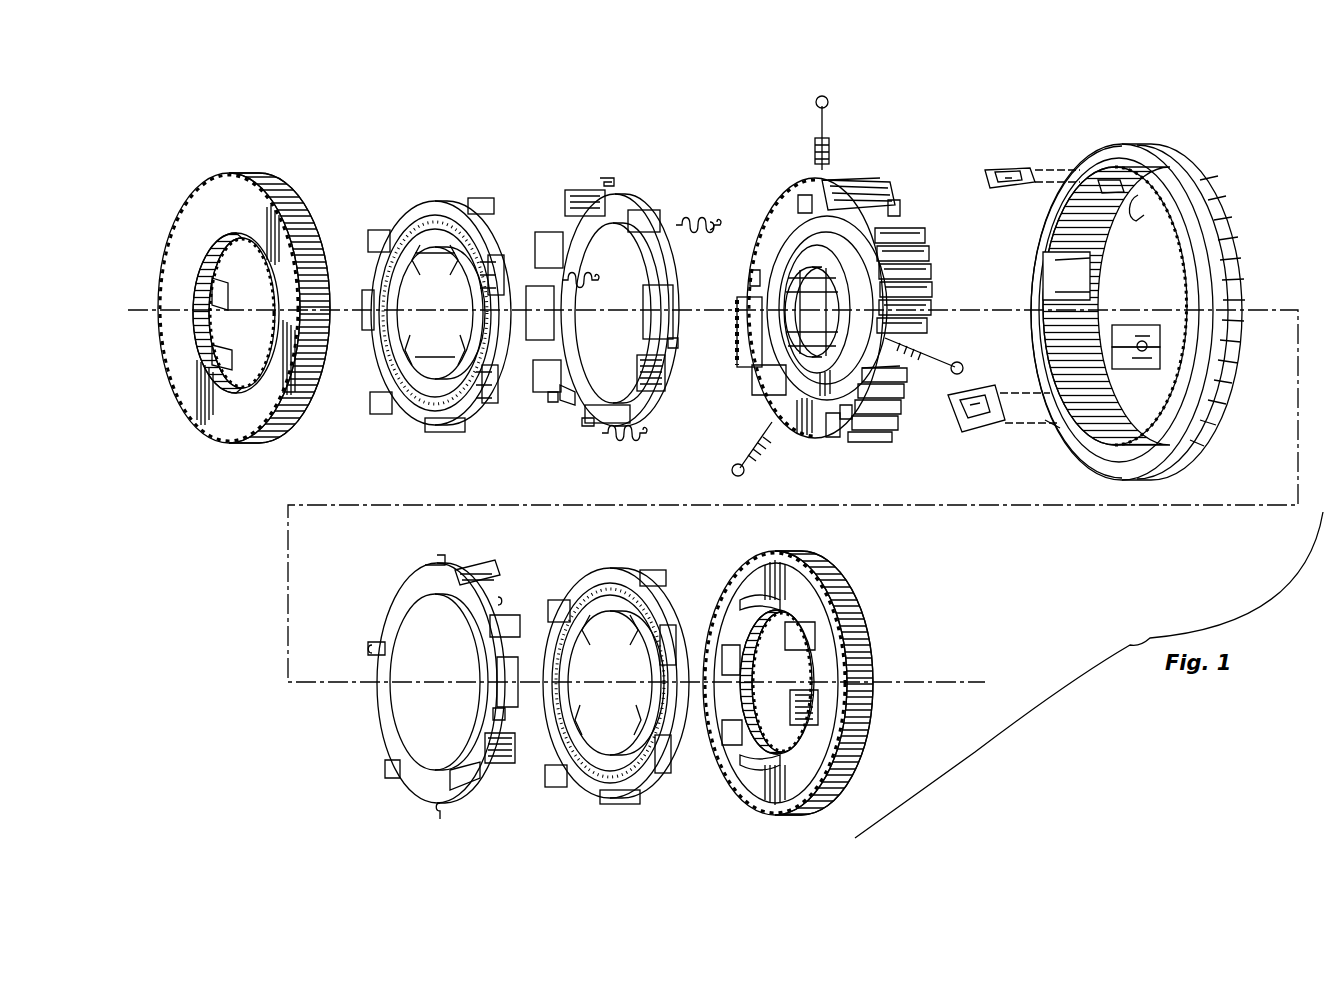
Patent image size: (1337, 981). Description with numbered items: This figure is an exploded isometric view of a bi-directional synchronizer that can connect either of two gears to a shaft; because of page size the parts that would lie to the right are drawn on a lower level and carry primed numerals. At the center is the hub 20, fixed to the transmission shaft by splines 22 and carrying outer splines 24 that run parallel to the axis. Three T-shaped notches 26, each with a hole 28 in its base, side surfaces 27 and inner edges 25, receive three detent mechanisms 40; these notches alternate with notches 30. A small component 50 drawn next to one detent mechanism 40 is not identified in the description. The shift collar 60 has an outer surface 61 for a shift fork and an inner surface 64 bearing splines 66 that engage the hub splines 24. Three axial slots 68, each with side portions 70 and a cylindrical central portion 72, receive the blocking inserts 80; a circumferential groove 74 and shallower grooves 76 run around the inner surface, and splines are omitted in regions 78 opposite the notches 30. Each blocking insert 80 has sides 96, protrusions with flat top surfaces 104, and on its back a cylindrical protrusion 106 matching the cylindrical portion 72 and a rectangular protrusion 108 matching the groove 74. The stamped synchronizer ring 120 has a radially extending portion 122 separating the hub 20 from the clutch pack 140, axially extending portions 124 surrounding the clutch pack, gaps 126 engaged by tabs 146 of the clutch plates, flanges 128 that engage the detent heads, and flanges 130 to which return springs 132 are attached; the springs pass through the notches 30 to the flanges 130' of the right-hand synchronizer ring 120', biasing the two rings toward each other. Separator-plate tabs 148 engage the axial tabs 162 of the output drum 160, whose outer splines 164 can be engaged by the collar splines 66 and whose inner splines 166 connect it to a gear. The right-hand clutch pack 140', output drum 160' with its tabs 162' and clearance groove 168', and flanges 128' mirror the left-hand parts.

The hub 20 is at (893, 158).
The splines 22 is at (790, 330).
The splines 24 is at (840, 182).
The inner edges 25 is at (858, 195).
The notches 26 is at (800, 198).
The surfaces 27 is at (910, 320).
The holes 28 is at (920, 272).
The notches 30 is at (885, 215).
The detent mechanisms 40 is at (848, 112).
The spring 50 is at (818, 158).
The shift collar 60 is at (1250, 145).
The outer surface 61 is at (1205, 195).
The inner surface 64 is at (1140, 205).
The splines 66 is at (1105, 215).
The slots 68 is at (1105, 168).
The side portions 70 is at (1010, 395).
The central portion 72 is at (1050, 425).
The circumferential groove 74 is at (1060, 240).
The grooves 76 is at (1065, 256).
The regions 78 is at (1175, 220).
The blocking inserts 80 is at (1040, 155).
The sides 96 is at (1130, 338).
The top surface 104 is at (980, 380).
The cylindrical protrusion 106 is at (1150, 372).
The rectangular protrusion 108 is at (1150, 328).
The synchronizer ring 120 is at (620, 258).
The radially extending portion 122 is at (592, 215).
The axially extending portions 124 is at (552, 318).
The gaps 126 is at (530, 382).
The flanges 128 is at (608, 294).
The flanges 130 is at (611, 313).
The return springs 132 is at (700, 225).
The clutch pack 140 is at (436, 272).
The tabs 146 is at (425, 212).
The tabs 148 is at (385, 262).
The output drum 160 is at (244, 277).
The tabs 162 is at (280, 343).
The splines 164 is at (235, 175).
The splines 166 is at (215, 235).
The synchronizer ring 120' is at (423, 683).
The flanges 128' is at (431, 651).
The flanges 130' is at (435, 696).
The clutch pack 140' is at (618, 698).
The output drum 160' is at (833, 683).
The tabs 162' is at (824, 683).
The groove 168' is at (809, 679).